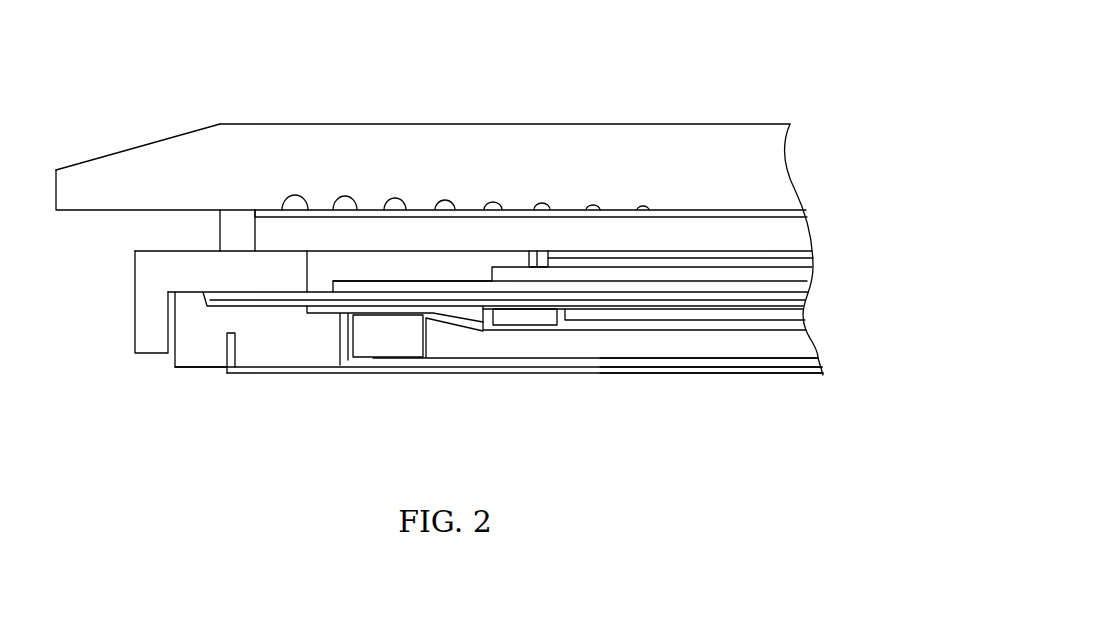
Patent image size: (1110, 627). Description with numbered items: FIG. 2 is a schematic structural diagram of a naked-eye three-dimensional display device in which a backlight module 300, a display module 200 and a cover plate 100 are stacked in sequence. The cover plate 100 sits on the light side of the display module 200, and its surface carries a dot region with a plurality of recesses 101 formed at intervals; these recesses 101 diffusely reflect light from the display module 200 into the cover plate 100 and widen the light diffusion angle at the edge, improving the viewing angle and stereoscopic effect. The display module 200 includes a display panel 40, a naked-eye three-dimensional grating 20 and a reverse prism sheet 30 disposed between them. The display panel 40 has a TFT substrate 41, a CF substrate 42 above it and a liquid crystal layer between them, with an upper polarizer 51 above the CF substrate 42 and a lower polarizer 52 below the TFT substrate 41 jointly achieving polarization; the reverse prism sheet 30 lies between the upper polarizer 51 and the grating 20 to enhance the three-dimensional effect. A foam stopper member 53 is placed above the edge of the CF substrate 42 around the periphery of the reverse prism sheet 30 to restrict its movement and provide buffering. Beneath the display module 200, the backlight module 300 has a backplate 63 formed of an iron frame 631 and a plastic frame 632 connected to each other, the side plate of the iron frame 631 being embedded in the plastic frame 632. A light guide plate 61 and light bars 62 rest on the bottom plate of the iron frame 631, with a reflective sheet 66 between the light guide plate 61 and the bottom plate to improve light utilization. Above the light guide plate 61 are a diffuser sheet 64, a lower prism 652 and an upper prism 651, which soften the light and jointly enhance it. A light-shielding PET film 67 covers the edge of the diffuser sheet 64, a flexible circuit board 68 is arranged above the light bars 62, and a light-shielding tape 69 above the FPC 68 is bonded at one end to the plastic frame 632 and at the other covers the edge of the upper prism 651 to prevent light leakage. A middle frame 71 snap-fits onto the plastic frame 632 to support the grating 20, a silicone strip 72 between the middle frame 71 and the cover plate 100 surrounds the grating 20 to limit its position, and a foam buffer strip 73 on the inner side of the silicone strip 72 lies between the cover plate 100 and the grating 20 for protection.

The cover plate 100 is at (798, 168).
The recesses 101 is at (345, 203).
The naked-eye 3D grating 20 is at (798, 235).
The display module 200 is at (822, 248).
The reverse prism sheet 30 is at (627, 255).
The display panel 40 is at (886, 248).
The thin film transistor (TFT) substrate 41 is at (802, 288).
The color filter (CF) substrate 42 is at (802, 275).
The upper polarizer 51 is at (693, 263).
The lower polarizer 52 is at (752, 290).
The stopper member 53 is at (530, 253).
The light guide plate 61 is at (465, 347).
The light bars 62 is at (392, 340).
The backplate 63 is at (323, 413).
The iron frame 631 is at (292, 372).
The plastic frame 632 is at (200, 355).
The diffuser sheet 64 is at (645, 330).
The upper prism 651 is at (778, 317).
The lower prism 652 is at (712, 325).
The reflective sheet 66 is at (802, 363).
The light-shielding PET film 67 is at (525, 317).
The flexible circuit board (FPC) 68 is at (347, 310).
The light-shielding tape 69 is at (578, 300).
The middle frame 71 is at (145, 320).
The silicone strip 72 is at (235, 230).
The buffer strip 73 is at (262, 212).
The backlight module 300 is at (170, 362).